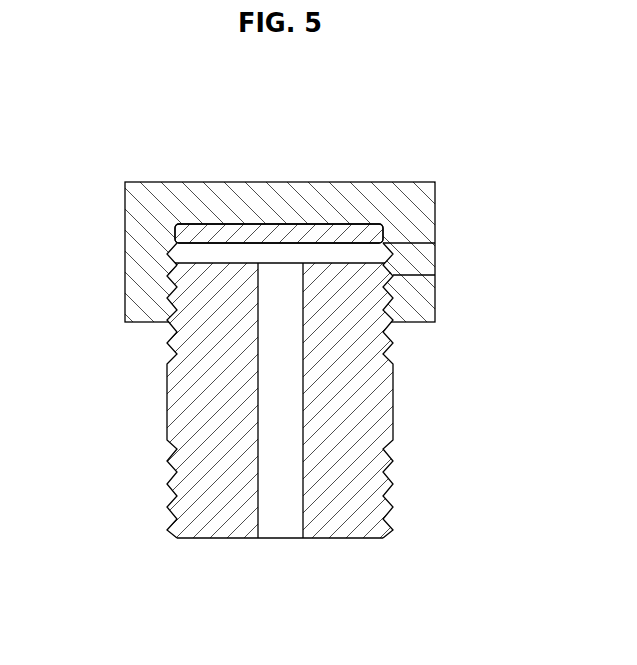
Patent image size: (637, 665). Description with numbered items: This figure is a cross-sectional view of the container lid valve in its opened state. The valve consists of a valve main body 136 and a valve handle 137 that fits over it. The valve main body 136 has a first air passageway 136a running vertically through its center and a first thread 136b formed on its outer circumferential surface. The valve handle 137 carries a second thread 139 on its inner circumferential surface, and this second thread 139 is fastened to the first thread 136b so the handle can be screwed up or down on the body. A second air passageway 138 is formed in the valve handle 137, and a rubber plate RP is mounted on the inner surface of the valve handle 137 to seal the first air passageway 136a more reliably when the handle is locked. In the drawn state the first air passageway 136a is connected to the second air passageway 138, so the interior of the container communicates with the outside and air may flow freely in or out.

The valve main body 136 is at (374, 459).
The first air passageway 136a is at (280, 538).
The first thread 136b is at (170, 326).
The valve handle 137 is at (394, 190).
The second air passageway 138 is at (290, 250).
The second thread 139 is at (170, 267).
The rubber plate RP is at (210, 236).